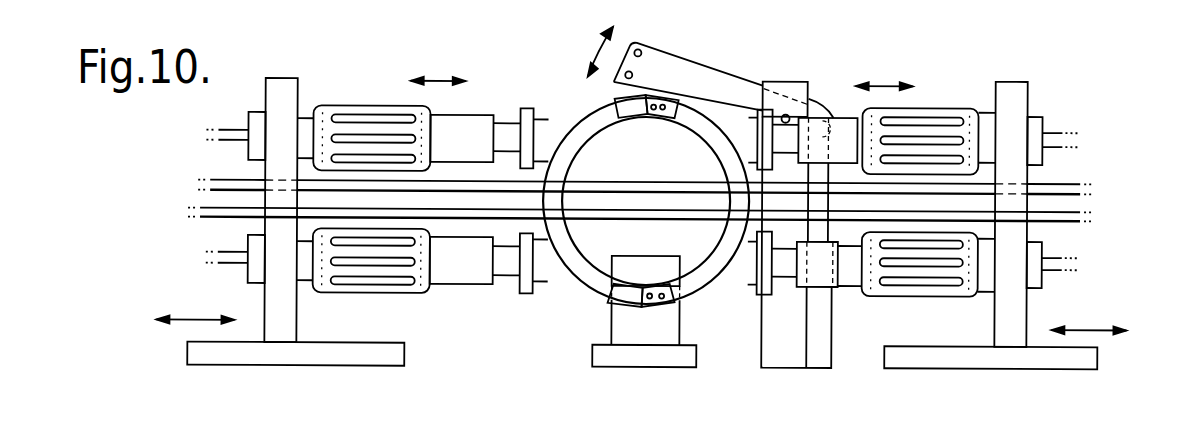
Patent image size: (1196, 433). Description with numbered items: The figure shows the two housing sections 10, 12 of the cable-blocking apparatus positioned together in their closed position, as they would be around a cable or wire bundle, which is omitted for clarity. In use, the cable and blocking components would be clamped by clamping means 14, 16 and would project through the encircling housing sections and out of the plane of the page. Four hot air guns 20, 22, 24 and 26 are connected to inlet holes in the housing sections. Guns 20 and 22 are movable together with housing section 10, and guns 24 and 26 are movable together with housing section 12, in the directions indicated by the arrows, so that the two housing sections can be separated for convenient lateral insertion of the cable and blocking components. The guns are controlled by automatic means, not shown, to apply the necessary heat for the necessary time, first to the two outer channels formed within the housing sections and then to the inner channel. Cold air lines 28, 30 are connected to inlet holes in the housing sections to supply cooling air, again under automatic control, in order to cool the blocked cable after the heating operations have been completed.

The housing section 10 is at (595, 284).
The housing section 12 is at (692, 283).
The clamping means 14 is at (710, 78).
The clamping means 16 is at (644, 266).
The hot air gun 20 is at (379, 107).
The hot air gun 22 is at (400, 292).
The hot air gun 24 is at (931, 107).
The hot air gun 26 is at (896, 296).
The cold air line 28 is at (217, 180).
The cold air line 30 is at (1065, 187).